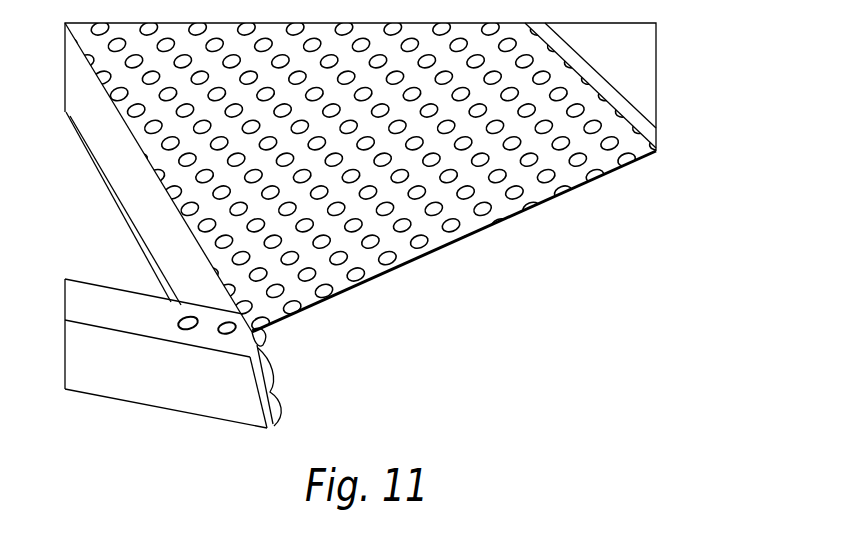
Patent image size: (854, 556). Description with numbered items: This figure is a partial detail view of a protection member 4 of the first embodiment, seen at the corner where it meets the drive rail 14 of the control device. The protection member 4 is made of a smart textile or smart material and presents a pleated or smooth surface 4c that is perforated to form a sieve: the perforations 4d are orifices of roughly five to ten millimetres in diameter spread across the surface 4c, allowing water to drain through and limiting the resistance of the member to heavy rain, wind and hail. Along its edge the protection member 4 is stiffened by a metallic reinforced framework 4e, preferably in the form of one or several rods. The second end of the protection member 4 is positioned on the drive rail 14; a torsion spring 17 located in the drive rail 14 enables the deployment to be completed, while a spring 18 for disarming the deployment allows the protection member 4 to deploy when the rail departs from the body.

The protection member 4 is at (536, 213).
The surface 4c is at (600, 167).
The perforations 4d is at (394, 213).
The reinforced framework 4e is at (614, 100).
The drive rail 14 is at (178, 385).
The torsion spring 17 is at (261, 349).
The spring for disarming the deployment 18 is at (279, 400).